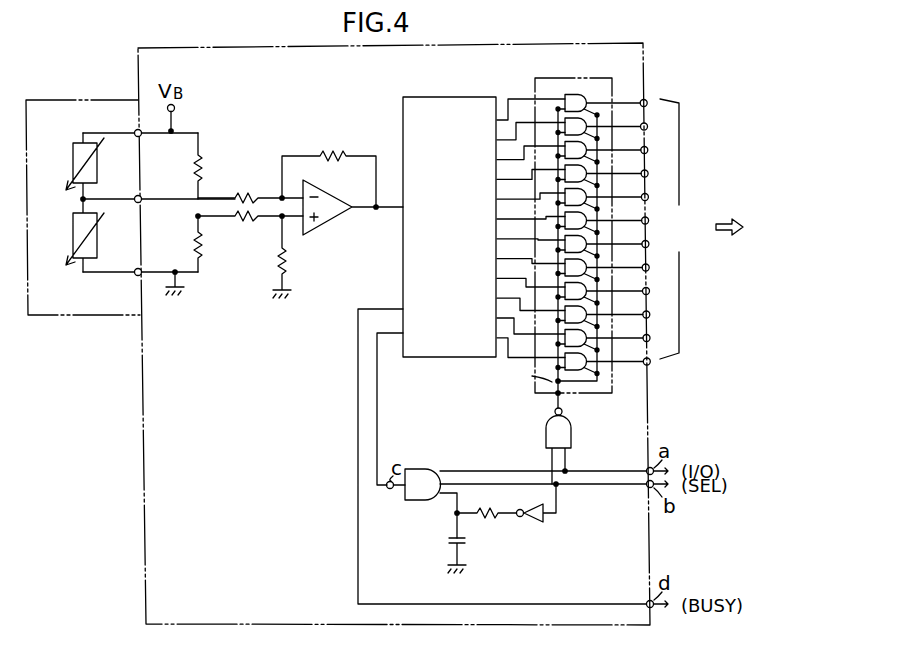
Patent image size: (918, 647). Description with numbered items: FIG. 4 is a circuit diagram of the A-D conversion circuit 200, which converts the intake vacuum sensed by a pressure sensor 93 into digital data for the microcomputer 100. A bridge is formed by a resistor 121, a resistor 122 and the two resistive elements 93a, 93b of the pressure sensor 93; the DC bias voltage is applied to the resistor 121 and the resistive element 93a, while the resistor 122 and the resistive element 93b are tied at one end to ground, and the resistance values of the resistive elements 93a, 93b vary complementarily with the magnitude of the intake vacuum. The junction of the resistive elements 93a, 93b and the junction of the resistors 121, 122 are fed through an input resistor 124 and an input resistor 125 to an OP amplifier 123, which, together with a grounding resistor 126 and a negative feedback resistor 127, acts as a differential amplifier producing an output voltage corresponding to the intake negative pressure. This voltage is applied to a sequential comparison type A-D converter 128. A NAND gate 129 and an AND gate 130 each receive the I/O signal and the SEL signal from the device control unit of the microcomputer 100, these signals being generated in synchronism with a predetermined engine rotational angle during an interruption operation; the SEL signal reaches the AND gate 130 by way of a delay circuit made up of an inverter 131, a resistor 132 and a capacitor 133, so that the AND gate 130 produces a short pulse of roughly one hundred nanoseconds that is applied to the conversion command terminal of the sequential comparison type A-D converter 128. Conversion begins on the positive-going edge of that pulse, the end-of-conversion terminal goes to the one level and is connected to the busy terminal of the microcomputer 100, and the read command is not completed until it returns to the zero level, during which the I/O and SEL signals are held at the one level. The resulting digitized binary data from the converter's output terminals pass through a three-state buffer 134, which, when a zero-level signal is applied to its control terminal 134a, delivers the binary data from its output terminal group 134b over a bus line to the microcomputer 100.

The A-D conversion circuit 200 is at (314, 45).
The pressure sensor 93 is at (83, 190).
The resistive element 93a is at (73, 153).
The resistive element 93b is at (73, 222).
The resistor 121 is at (206, 177).
The resistor 122 is at (194, 246).
The OP amplifier 123 is at (332, 222).
The input resistor 124 is at (247, 196).
The input resistor 125 is at (247, 219).
The grounding resistor 126 is at (300, 262).
The negative feedback resistor 127 is at (325, 150).
The sequential comparison type A-D converter 128 is at (470, 97).
The NAND gate 129 is at (572, 432).
The AND gate 130 is at (437, 501).
The inverter 131 is at (544, 518).
The resistor 132 is at (493, 531).
The capacitor 133 is at (449, 543).
The three-state buffer 134 is at (599, 232).
The control terminal 134a is at (556, 394).
The output terminal group 134b is at (687, 229).
The microcomputer 100 is at (785, 228).